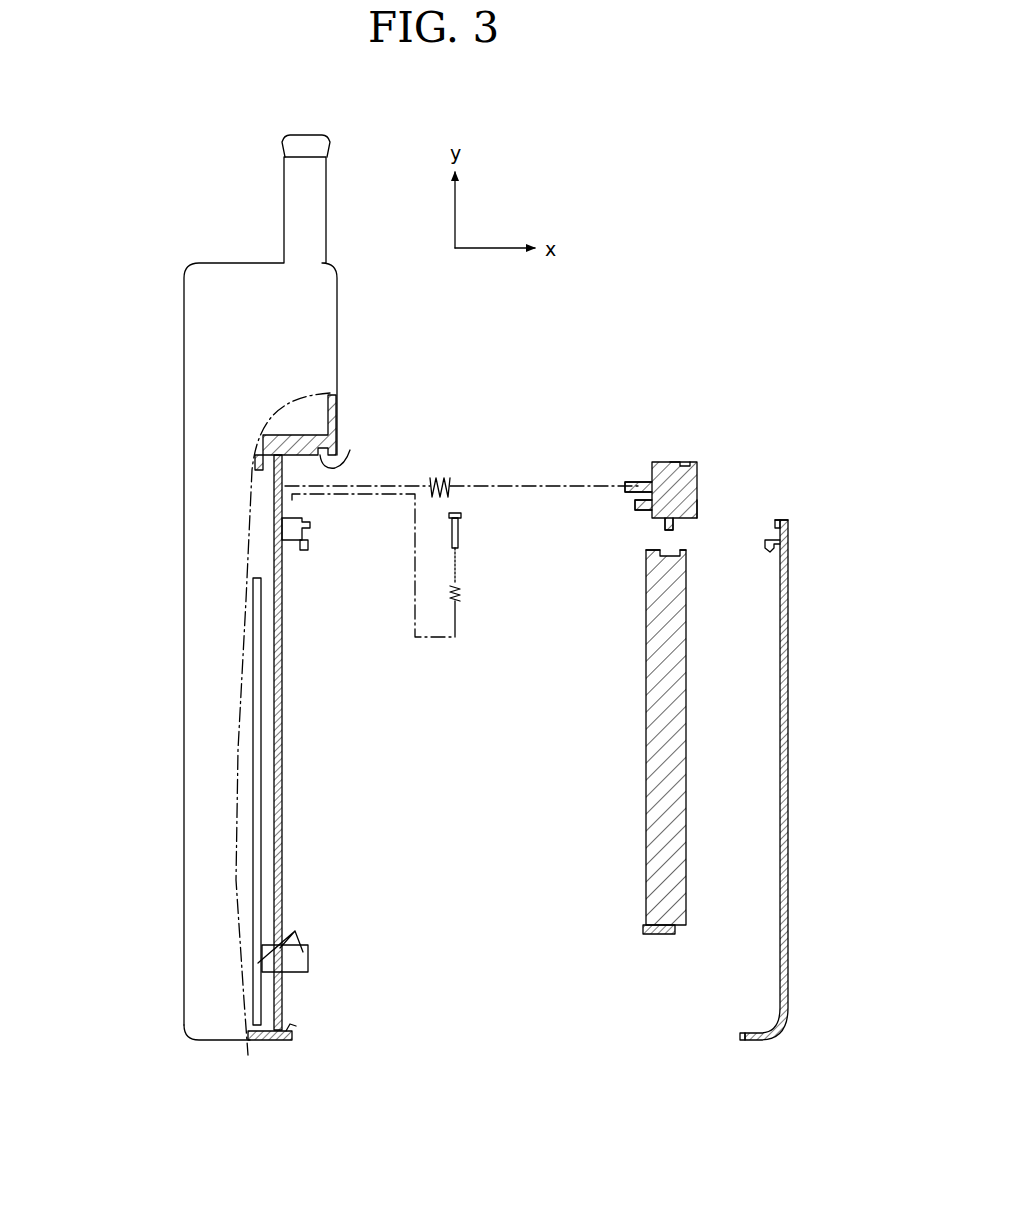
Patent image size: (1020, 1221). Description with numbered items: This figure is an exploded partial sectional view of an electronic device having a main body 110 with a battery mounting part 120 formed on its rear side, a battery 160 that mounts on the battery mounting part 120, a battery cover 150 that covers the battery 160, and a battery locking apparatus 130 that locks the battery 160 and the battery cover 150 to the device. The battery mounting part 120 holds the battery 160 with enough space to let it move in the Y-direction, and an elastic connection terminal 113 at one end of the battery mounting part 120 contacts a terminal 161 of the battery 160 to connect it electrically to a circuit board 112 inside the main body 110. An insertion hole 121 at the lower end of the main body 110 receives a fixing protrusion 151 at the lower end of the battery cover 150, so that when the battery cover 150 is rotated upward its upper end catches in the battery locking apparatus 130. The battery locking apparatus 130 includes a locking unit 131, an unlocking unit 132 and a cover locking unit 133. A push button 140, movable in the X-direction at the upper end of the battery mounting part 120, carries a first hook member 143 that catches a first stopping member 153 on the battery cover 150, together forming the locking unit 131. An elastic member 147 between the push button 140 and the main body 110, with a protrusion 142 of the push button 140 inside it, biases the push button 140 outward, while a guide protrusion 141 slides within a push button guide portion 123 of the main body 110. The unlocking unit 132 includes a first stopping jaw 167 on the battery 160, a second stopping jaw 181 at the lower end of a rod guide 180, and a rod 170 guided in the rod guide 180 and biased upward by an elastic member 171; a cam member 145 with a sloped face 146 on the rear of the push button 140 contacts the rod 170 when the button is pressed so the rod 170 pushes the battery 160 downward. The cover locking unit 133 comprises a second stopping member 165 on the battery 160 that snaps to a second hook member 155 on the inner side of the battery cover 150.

The main body 110 is at (170, 330).
The circuit board 112 is at (258, 832).
The elastic connection terminal 113 is at (300, 936).
The battery mounting part 120 is at (283, 775).
The insertion hole 121 is at (298, 1033).
The push button guide portion 123 is at (345, 465).
The battery locking apparatus 130 is at (618, 312).
The locking unit 131 is at (870, 410).
The unlocking unit 132 is at (490, 640).
The cover locking unit 133 is at (870, 516).
The push button 140 is at (698, 478).
The guide protrusion 141 is at (678, 461).
The protrusion 142 is at (634, 482).
The first hook member 143 is at (700, 512).
The cam member 145 is at (640, 503).
The sloped face 146 is at (665, 527).
The elastic member 147 is at (442, 470).
The battery cover 150 is at (790, 833).
The fixing protrusion 151 is at (740, 1041).
The first stopping member 153 is at (783, 521).
The second hook member 155 is at (778, 545).
The battery 160 is at (660, 690).
The terminal 161 is at (655, 936).
The second stopping member 165 is at (690, 553).
The first stopping jaw 167 is at (650, 551).
The rod 170 is at (460, 531).
The elastic member 171 is at (462, 592).
The rod guide 180 is at (311, 524).
The second stopping jaw 181 is at (308, 548).